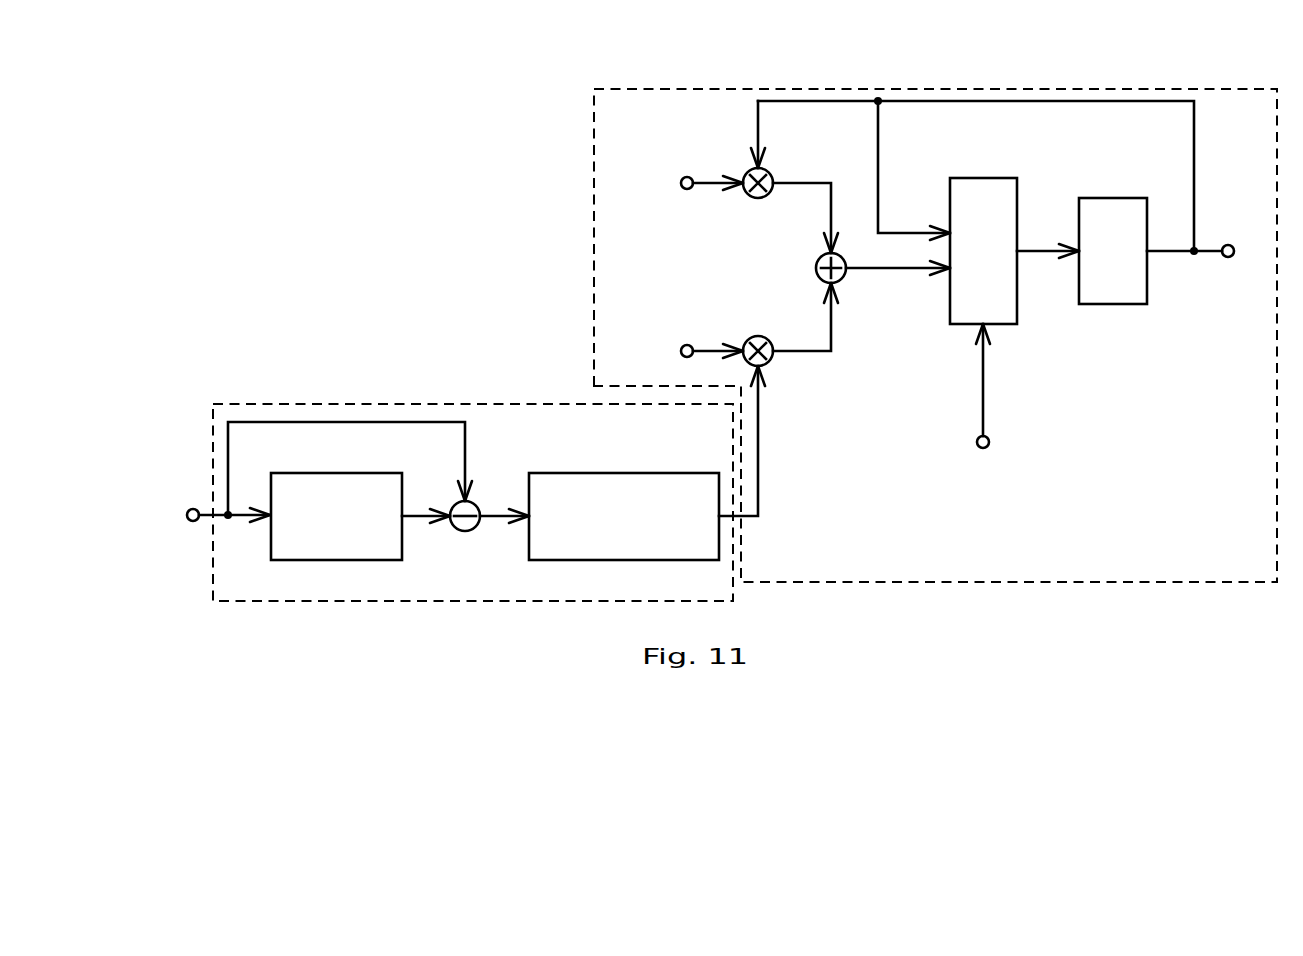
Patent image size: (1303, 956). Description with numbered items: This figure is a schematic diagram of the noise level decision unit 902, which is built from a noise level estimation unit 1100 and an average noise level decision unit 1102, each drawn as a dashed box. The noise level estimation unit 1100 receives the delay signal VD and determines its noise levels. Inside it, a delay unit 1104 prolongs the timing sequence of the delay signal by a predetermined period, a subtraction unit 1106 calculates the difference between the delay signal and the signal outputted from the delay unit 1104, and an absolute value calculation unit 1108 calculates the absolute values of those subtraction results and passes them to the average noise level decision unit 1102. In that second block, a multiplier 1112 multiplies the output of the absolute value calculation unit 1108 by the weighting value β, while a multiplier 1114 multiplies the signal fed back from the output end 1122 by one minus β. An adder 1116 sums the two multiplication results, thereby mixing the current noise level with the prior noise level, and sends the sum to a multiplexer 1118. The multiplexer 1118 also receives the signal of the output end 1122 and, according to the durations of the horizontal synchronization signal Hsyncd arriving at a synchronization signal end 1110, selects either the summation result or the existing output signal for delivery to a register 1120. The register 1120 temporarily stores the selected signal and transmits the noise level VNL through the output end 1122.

The noise level decision unit 902 is at (366, 162).
The noise level estimation unit 1100 is at (268, 404).
The average noise level decision unit 1102 is at (630, 88).
The delay unit 1104 is at (363, 473).
The subtraction unit 1106 is at (465, 531).
The absolute value calculation unit 1108 is at (597, 473).
The synchronization signal end 1110 is at (990, 440).
The multiplier 1112 is at (758, 336).
The multiplier 1114 is at (758, 198).
The adder 1116 is at (843, 279).
The multiplexer 1118 is at (980, 178).
The register 1120 is at (1113, 198).
The output end 1122 is at (1228, 245).